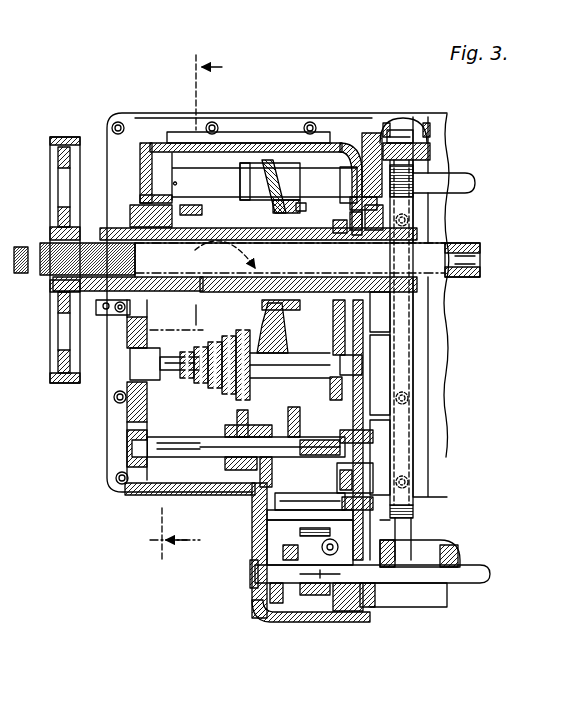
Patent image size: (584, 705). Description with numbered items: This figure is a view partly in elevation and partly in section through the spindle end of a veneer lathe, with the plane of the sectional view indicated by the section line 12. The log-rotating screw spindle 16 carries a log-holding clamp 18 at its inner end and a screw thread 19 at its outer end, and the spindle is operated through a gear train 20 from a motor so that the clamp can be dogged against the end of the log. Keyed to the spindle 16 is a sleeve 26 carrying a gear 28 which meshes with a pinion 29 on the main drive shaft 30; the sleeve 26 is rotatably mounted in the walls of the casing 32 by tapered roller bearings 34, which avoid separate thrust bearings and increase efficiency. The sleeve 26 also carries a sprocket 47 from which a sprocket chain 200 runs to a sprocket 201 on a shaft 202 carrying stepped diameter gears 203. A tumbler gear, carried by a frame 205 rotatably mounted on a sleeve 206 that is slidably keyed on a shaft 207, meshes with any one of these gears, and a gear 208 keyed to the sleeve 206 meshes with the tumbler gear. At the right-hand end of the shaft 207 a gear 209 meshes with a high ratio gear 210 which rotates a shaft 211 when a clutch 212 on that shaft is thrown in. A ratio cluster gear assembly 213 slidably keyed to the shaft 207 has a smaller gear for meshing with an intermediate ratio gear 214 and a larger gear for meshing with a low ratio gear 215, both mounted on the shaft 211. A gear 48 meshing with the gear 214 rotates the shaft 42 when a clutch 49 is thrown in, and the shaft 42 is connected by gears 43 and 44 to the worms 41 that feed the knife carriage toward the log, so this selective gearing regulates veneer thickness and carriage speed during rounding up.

The section line 12 is at (198, 308).
The screw spindle 16 is at (290, 259).
The log-holding clamp 18 is at (466, 246).
The screw thread 19 is at (47, 248).
The gear train 20 is at (57, 358).
The sleeve 26 is at (317, 297).
The gear 28 is at (267, 203).
The pinion 29 is at (278, 170).
The main drive shaft 30 is at (208, 175).
The casing 32 is at (152, 143).
The tapered roller bearings 34 is at (458, 327).
The worms 41 is at (413, 183).
The shaft 42 is at (477, 572).
The gear 43 is at (443, 545).
The gear 44 is at (370, 588).
The sprocket 47 is at (325, 303).
The gear 48 is at (277, 593).
The clutch 49 is at (317, 590).
The sprocket chain 200 is at (380, 330).
The sprocket 201 is at (380, 407).
The shaft 202 is at (282, 363).
The stepped diameter gears 203 is at (173, 380).
The frame 205 is at (185, 385).
The sleeve 206 is at (243, 462).
The shaft 207 is at (173, 455).
The gear 208 is at (252, 484).
The gear 209 is at (343, 443).
The high ratio gear 210 is at (380, 470).
The shaft 211 is at (267, 493).
The clutch 212 is at (370, 463).
The ratio cluster gear assembly 213 is at (296, 415).
The intermediate ratio gear 214 is at (265, 535).
The low ratio gear 215 is at (320, 557).